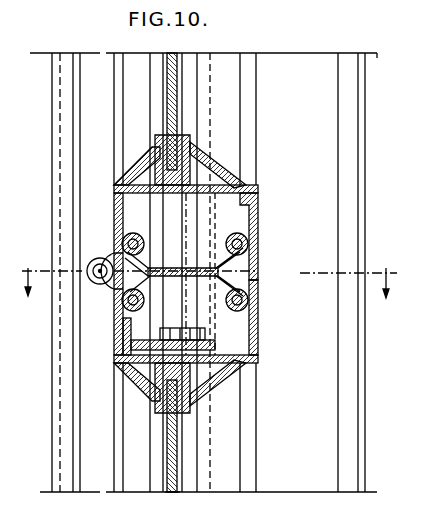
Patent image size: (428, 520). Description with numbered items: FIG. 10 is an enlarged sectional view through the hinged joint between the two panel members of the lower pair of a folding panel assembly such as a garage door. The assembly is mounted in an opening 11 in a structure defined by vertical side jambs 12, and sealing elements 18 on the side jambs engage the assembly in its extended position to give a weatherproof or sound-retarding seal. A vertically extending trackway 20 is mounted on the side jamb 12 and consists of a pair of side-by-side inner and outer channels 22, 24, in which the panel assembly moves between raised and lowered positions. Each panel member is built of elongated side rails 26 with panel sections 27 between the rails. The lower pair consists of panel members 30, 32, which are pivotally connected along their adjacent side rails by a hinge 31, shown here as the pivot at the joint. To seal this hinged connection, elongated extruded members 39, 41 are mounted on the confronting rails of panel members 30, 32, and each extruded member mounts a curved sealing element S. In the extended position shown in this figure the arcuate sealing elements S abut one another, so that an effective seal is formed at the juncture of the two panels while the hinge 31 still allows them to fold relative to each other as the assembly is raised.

The opening 11 is at (207, 273).
The side jamb 12 is at (402, 103).
The sealing element 18 is at (90, 68).
The trackway 20 is at (366, 108).
The inner channel 22 is at (330, 366).
The outer channel 24 is at (166, 494).
The side rail 26 is at (150, 146).
The panel section 27 is at (176, 82).
The panel member 30 is at (228, 443).
The hinge 31 is at (98, 256).
The panel member 32 is at (262, 130).
The extruded member 39 is at (258, 345).
The extruded member 41 is at (258, 228).
The sealing element S is at (168, 264).